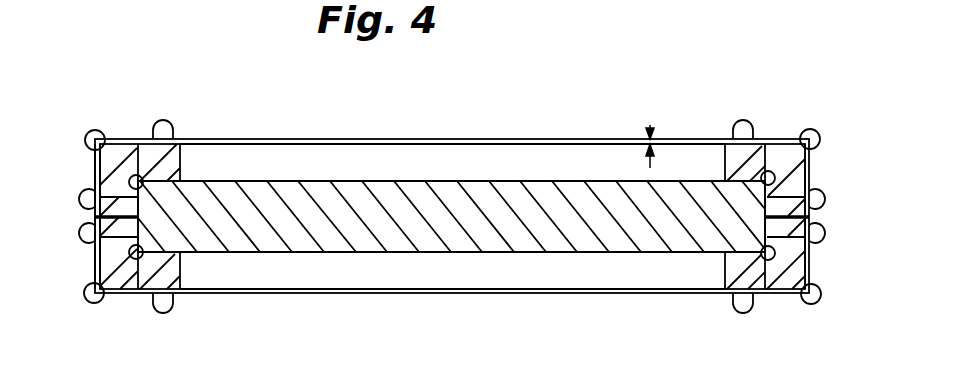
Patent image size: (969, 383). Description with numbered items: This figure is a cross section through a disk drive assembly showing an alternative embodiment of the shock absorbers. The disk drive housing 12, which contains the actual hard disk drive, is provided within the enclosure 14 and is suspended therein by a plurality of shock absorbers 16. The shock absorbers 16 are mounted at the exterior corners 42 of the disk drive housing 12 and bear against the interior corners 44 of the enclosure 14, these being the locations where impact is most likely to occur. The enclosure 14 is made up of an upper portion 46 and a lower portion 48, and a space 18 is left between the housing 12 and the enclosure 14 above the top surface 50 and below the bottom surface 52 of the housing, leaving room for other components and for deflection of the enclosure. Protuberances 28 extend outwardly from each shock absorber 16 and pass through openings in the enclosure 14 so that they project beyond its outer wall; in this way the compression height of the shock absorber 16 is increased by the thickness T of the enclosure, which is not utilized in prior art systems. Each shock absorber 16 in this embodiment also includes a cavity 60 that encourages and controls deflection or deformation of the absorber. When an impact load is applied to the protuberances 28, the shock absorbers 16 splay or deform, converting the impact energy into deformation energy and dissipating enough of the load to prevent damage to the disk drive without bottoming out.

The disk drive housing 12 is at (566, 184).
The enclosure 14 is at (292, 138).
The shock absorber 16 is at (177, 153).
The space 18 is at (118, 140).
The protuberance 28 is at (745, 120).
The exterior corner 42 is at (137, 176).
The interior corner 44 is at (88, 133).
The upper portion 46 is at (95, 173).
The lower portion 48 is at (93, 263).
The top surface 50 is at (500, 182).
The bottom surface 52 is at (310, 256).
The cavity 60 is at (774, 175).
The thickness of the enclosure T is at (650, 125).